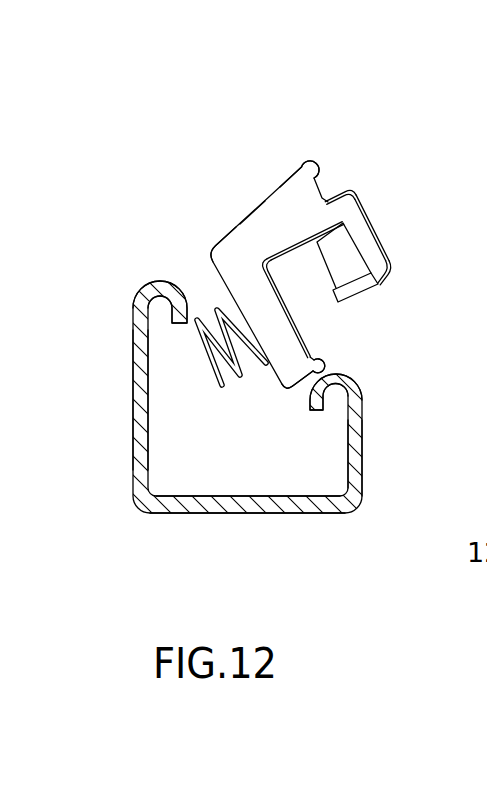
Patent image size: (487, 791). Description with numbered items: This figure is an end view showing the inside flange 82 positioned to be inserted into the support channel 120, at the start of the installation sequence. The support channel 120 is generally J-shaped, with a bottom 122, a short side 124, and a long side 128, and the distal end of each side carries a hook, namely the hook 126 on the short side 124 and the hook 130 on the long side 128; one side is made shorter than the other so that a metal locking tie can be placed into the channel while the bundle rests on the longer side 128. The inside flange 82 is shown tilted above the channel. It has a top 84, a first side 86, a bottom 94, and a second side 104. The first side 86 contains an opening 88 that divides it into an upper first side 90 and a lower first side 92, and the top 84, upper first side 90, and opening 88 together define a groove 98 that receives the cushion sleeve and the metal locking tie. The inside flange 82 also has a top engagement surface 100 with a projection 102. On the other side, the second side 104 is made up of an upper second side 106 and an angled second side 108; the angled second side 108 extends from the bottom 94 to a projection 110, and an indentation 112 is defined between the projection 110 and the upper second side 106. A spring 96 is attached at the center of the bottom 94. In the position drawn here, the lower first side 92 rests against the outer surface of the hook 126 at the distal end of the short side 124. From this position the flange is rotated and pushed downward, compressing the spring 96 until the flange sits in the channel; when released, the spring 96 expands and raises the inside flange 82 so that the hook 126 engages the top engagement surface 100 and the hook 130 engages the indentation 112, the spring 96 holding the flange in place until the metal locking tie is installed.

The inside flange 82 is at (271, 194).
The top 84 is at (380, 232).
The first side 86 is at (366, 300).
The opening 88 is at (303, 291).
The upper first side 90 is at (390, 285).
The lower first side 92 is at (300, 387).
The bottom 94 is at (265, 368).
The spring 96 is at (209, 368).
The groove 98 is at (343, 251).
The top engagement surface 100 is at (308, 323).
The projection 102 is at (325, 364).
The second side 104 is at (229, 232).
The upper second side 106 is at (333, 194).
The angled second side 108 is at (247, 215).
The projection 110 is at (304, 164).
The indentation 112 is at (316, 178).
The support channel 120 is at (135, 477).
The bottom 122 is at (223, 514).
The short side 124 is at (362, 463).
The hook 126 is at (348, 413).
The long side 128 is at (136, 391).
The hook 130 is at (152, 284).